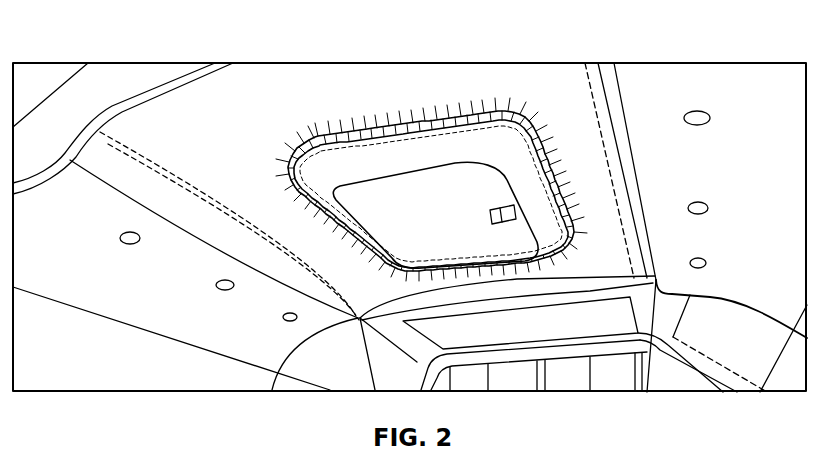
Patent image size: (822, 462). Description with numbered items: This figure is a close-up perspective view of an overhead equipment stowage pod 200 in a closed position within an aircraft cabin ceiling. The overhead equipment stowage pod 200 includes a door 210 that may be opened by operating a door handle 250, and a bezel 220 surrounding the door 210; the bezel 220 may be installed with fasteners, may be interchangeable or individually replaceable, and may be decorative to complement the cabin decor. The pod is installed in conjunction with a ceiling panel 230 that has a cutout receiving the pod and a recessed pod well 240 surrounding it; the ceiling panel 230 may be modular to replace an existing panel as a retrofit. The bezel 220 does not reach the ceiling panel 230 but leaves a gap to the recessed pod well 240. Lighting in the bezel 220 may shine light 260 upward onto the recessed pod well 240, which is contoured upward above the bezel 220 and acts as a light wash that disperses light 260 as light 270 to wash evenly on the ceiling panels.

The overhead equipment stowage pod 200 is at (238, 42).
The door 210 is at (453, 228).
The bezel 220 is at (420, 160).
The ceiling panel 230 is at (193, 143).
The recessed pod well 240 is at (539, 150).
The door handle 250 is at (515, 216).
The light 260 is at (423, 117).
The light 270 is at (283, 140).